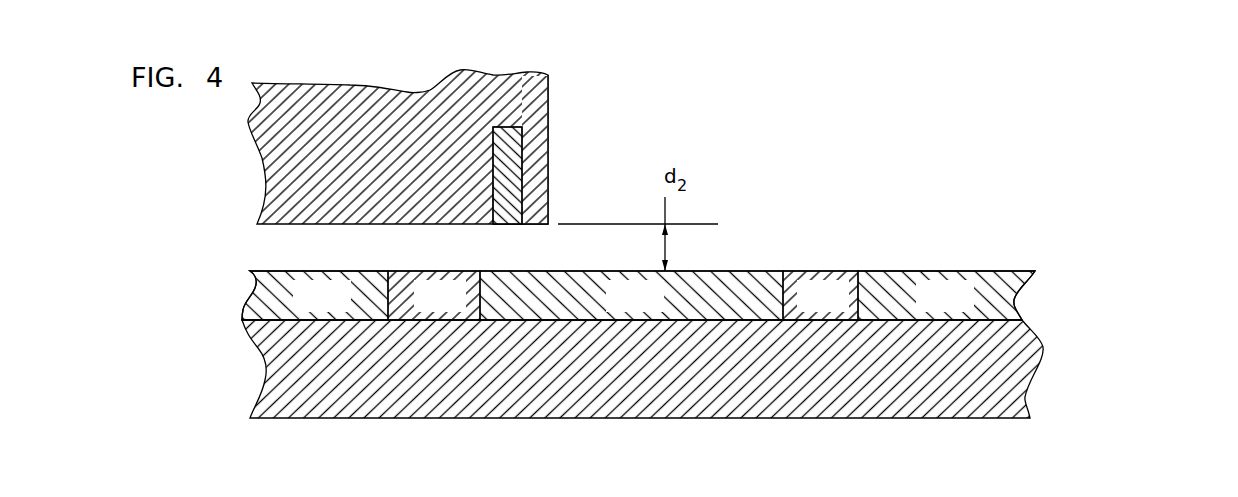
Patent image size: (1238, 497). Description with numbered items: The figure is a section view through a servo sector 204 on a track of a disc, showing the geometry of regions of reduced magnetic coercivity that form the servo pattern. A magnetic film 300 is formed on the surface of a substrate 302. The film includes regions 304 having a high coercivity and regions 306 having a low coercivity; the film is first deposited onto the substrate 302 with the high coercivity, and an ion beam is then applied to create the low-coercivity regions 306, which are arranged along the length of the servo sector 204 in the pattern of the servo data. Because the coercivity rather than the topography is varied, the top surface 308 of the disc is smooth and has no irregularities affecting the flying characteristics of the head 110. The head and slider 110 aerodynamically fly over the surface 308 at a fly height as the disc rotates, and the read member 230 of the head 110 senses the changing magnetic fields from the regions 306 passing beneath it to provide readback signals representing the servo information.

The head 110 is at (439, 147).
The read member 230 is at (523, 167).
The servo sector 204 is at (1020, 242).
The magnetic film 300 is at (641, 254).
The substrate 302 is at (1035, 370).
The regions having a high coercivity 304 is at (641, 270).
The regions having a low coercivity 306 is at (447, 271).
The top surface 308 is at (278, 271).